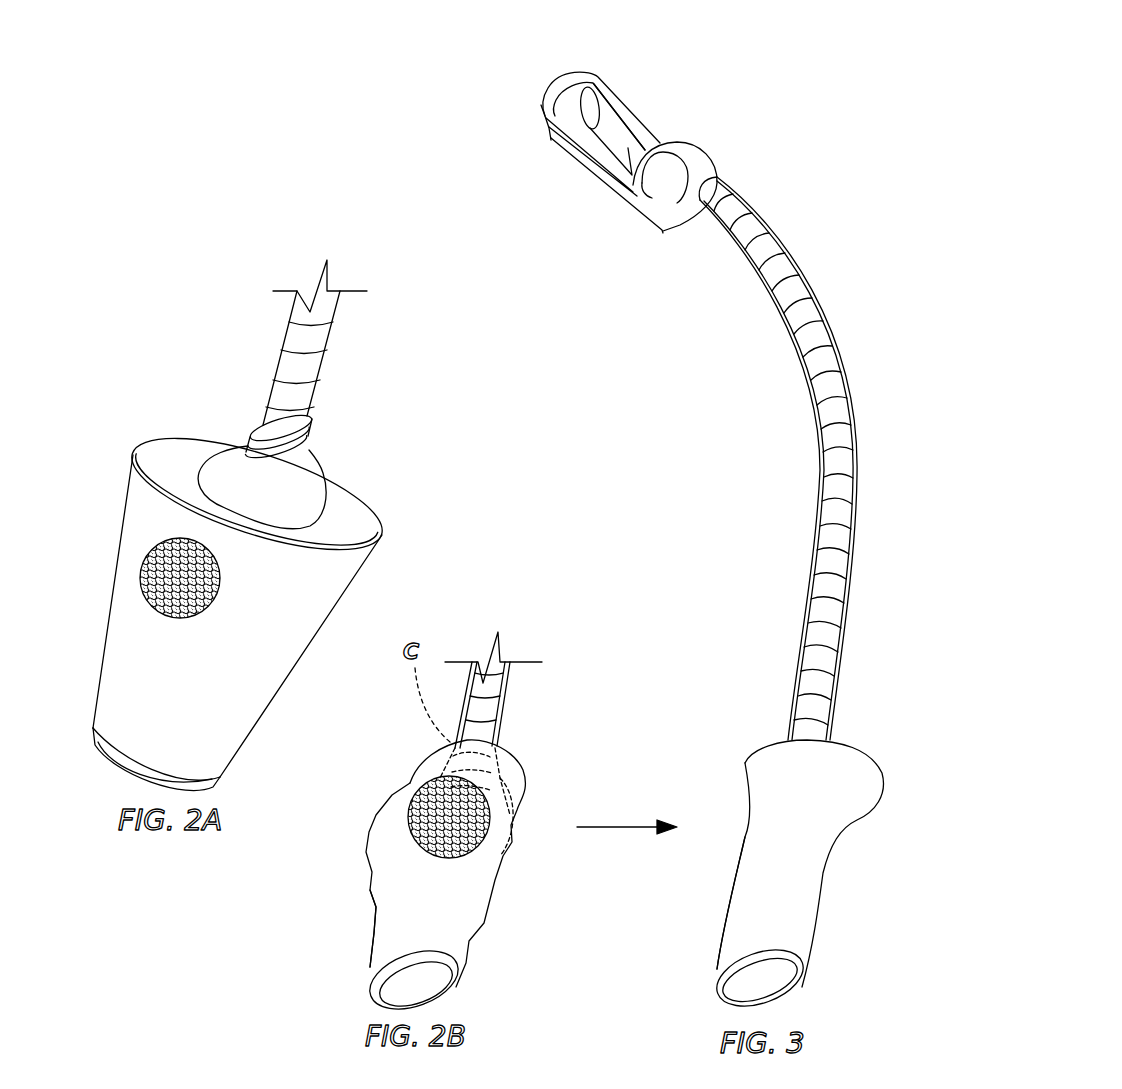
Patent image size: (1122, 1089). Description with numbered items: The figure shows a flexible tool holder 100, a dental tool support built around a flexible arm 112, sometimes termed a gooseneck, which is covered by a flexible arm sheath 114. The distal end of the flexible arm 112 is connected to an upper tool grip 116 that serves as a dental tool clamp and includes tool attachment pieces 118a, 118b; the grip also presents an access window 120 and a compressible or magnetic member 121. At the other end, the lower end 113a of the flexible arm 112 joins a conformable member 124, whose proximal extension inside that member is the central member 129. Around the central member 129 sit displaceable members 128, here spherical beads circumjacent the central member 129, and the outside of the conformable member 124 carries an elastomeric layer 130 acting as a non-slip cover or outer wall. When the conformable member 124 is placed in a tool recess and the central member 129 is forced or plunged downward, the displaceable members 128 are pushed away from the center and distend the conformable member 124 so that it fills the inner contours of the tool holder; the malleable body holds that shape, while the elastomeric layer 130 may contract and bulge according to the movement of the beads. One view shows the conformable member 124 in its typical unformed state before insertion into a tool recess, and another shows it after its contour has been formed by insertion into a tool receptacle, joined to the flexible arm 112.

In FIG. 3, the flexible tool holder 100 is at (598, 287).
In FIG. 2A, the flexible arm 112 is at (270, 319).
In FIG. 3, the flexible arm 112 is at (778, 360).
In FIG. 2A, the lower end 113a is at (335, 440).
In FIG. 2B, the lower end 113a is at (512, 736).
In FIG. 3, the flexible arm sheath 114 is at (816, 458).
In FIG. 3, the upper tool grip 116 is at (634, 154).
In FIG. 3, the tool attachment piece 118a is at (613, 197).
In FIG. 3, the tool attachment piece 118b is at (687, 133).
In FIG. 3, the access window 120 is at (653, 110).
In FIG. 3, the compressible or magnetic member 121 is at (598, 82).
In FIG. 2A, the conformable member 124 is at (400, 552).
In FIG. 2B, the conformable member 124 is at (406, 740).
In FIG. 3, the conformable member 124 is at (770, 775).
In FIG. 2A, the displaceable member 128 is at (147, 553).
In FIG. 2B, the displaceable member 128 is at (418, 790).
In FIG. 2B, the central member 129 is at (503, 843).
In FIG. 2A, the elastomeric layer 130 is at (122, 677).
In FIG. 2B, the elastomeric layer 130 is at (372, 820).
In FIG. 3, the elastomeric layer 130 is at (722, 930).